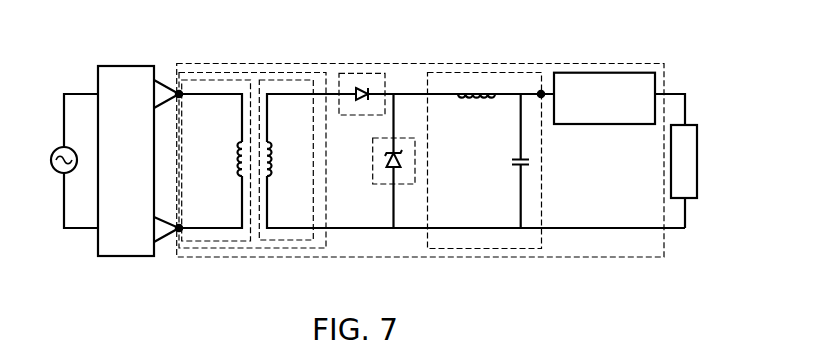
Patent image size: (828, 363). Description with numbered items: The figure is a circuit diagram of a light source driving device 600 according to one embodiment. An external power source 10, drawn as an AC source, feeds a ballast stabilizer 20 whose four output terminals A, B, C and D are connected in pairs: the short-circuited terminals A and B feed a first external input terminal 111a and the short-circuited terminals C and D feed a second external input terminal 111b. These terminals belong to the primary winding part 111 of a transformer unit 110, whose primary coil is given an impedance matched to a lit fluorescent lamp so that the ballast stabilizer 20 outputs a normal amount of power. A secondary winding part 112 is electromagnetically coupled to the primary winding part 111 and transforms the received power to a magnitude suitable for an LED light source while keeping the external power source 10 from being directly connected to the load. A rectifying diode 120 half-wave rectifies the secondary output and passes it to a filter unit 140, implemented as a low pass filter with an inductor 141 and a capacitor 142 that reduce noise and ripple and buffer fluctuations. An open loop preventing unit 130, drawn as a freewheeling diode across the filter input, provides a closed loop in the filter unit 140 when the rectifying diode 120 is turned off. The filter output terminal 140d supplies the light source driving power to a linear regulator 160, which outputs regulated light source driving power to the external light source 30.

The external power source 10 is at (57, 149).
The ballast stabilizer 20 is at (122, 66).
The external light source 30 is at (689, 200).
The transformer unit 110 is at (258, 72).
The primary winding part 111 is at (212, 80).
The first external input terminal 111a is at (178, 90).
The second external input terminal 111b is at (178, 233).
The secondary winding part 112 is at (305, 80).
The rectifying diode 120 is at (367, 73).
The open loop preventing unit 130 is at (373, 160).
The filter unit 140 is at (490, 73).
The output terminal 140d is at (542, 90).
The inductor 141 is at (477, 105).
The capacitor 142 is at (511, 160).
The linear regulator 160 is at (605, 72).
The light source driving device 600 is at (642, 63).